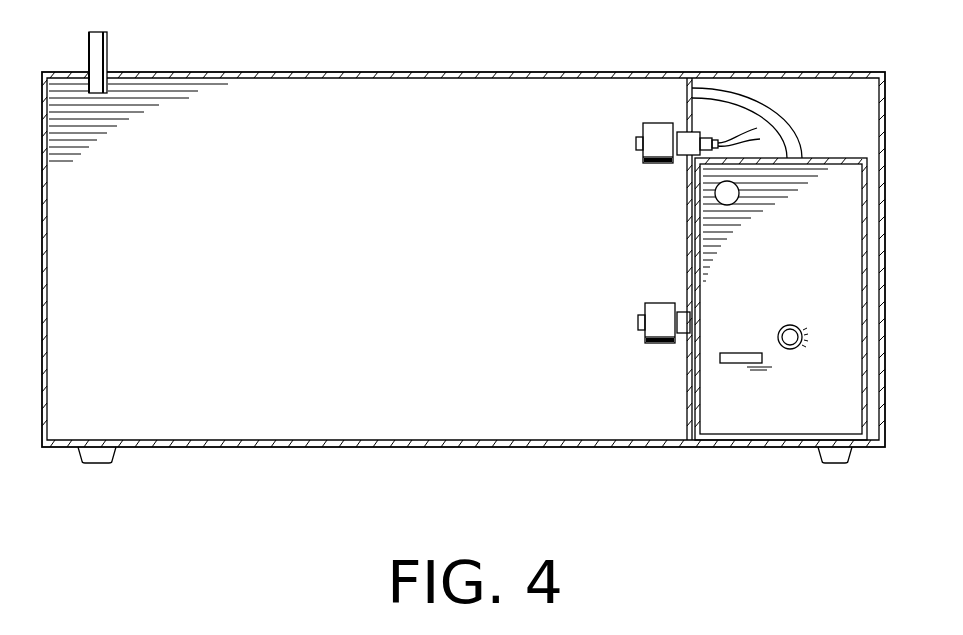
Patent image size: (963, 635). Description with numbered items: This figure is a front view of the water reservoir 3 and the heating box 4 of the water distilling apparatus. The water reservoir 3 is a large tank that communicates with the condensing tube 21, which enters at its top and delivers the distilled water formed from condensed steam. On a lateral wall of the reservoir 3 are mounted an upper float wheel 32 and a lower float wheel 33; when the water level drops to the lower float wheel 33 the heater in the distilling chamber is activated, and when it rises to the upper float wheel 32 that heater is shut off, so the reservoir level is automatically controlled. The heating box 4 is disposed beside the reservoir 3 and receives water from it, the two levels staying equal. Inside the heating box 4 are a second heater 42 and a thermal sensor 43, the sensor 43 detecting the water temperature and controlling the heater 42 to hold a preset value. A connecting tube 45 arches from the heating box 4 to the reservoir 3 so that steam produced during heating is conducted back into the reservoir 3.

The water reservoir 3 is at (312, 413).
The heating box 4 is at (829, 193).
The condensing tube 21 is at (107, 53).
The upper float wheel 32 is at (655, 145).
The lower float wheel 33 is at (656, 327).
The second heater 42 is at (730, 367).
The thermal sensor 43 is at (789, 342).
The connecting tube 45 is at (731, 95).